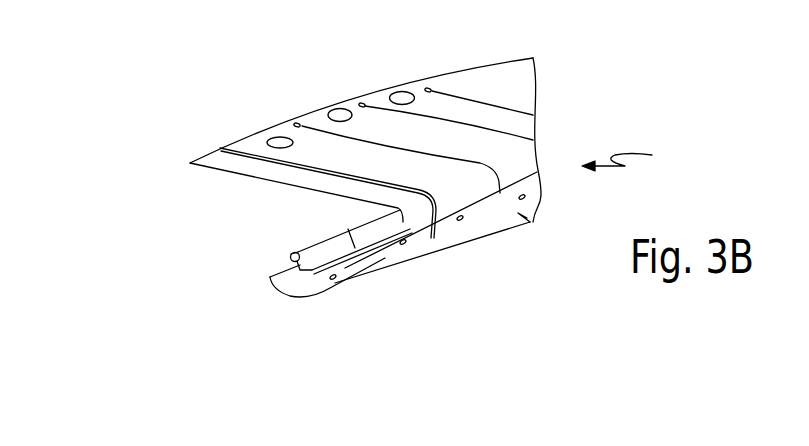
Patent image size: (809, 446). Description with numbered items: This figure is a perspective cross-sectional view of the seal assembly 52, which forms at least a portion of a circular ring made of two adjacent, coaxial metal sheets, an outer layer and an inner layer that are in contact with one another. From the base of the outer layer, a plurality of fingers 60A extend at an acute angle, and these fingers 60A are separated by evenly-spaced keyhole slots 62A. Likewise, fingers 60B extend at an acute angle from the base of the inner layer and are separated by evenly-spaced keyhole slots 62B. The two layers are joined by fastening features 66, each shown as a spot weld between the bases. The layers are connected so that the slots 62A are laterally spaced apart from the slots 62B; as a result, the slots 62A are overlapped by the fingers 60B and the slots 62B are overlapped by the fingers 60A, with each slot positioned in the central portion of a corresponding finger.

The seal assembly 52 is at (632, 160).
The fingers 60A is at (480, 238).
The fingers 60B is at (280, 288).
The keyhole slots 62A is at (470, 98).
The keyhole slots 62B is at (273, 278).
The fastening features 66 is at (278, 136).